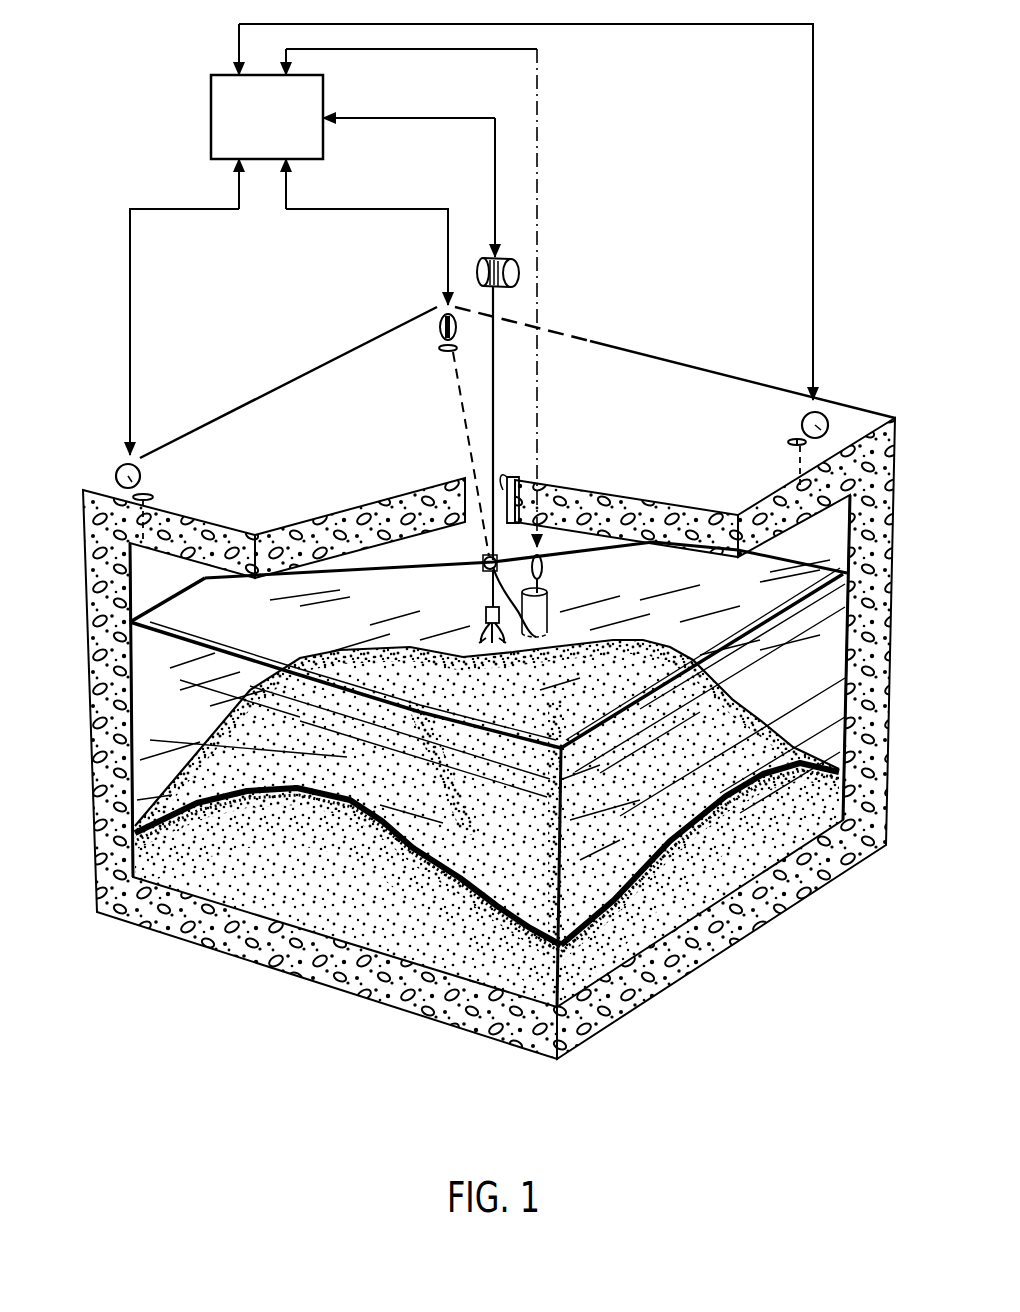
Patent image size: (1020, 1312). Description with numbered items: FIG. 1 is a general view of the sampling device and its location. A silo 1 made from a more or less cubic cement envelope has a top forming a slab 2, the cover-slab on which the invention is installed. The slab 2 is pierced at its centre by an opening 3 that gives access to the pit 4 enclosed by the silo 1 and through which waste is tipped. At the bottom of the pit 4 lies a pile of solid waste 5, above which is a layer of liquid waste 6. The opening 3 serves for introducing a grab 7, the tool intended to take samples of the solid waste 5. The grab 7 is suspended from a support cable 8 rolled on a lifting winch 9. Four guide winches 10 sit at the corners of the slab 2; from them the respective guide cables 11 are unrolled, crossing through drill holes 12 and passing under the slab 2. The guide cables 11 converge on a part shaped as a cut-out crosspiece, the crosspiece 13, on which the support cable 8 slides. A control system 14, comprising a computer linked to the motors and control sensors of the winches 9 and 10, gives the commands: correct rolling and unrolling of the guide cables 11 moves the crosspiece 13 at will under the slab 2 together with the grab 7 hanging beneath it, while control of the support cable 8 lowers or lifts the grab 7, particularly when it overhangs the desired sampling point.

The silo 1 is at (713, 966).
The slab 2 is at (270, 390).
The opening 3 is at (514, 480).
The pit 4 is at (157, 580).
The solid waste 5 is at (225, 853).
The liquid waste 6 is at (160, 758).
The grab 7 is at (481, 622).
The support cable 8 is at (498, 357).
The lifting winch 9 is at (520, 268).
The guide winch 10 is at (121, 465).
The guide cable 11 is at (598, 550).
The drill hole 12 is at (795, 437).
The crosspiece 13 is at (484, 556).
The control system 14 is at (223, 103).